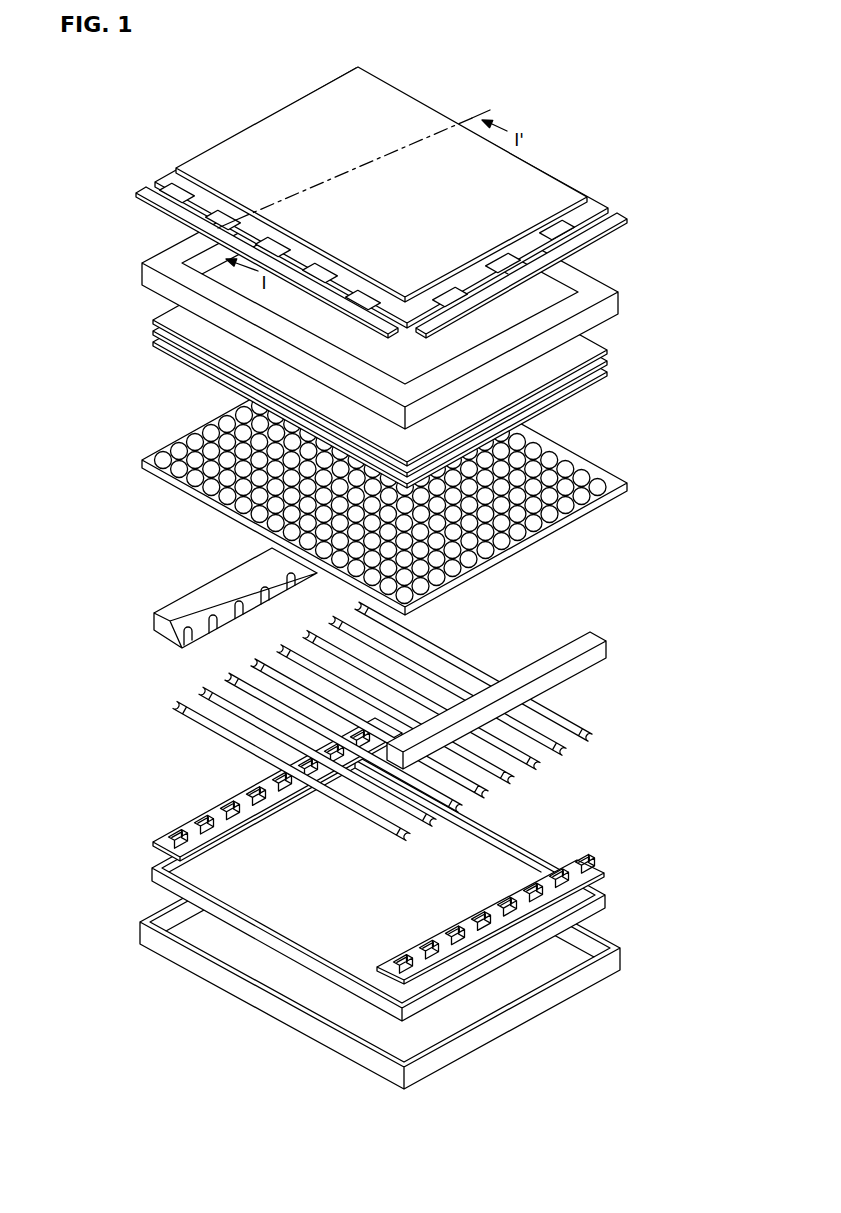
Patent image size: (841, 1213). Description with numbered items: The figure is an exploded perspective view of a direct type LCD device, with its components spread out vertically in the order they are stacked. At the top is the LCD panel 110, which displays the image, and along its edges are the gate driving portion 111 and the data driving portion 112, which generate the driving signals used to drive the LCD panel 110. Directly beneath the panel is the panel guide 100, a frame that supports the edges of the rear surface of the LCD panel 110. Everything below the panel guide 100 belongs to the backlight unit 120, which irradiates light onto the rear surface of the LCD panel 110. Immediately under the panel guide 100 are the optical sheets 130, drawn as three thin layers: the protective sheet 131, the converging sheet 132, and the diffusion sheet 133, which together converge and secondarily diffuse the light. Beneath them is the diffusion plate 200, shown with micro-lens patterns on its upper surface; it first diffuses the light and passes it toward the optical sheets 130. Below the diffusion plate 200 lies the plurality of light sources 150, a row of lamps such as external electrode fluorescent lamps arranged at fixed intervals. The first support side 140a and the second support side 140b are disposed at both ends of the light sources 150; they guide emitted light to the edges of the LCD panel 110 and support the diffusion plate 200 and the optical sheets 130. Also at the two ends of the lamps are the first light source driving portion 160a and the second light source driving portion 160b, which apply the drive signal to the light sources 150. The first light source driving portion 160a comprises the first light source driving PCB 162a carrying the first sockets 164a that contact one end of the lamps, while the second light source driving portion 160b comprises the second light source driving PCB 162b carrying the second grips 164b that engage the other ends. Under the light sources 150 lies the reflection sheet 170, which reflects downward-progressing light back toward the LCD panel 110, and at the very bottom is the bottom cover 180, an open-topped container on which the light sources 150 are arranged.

The panel guide 100 is at (600, 283).
The LCD panel 110 is at (377, 202).
The gate driving portion 111 is at (613, 216).
The data driving portion 112 is at (150, 188).
The backlight unit 120 is at (708, 347).
The optical sheets 130 is at (429, 348).
The protective sheet 131 is at (592, 342).
The converging sheet 132 is at (605, 361).
The diffusion sheet 133 is at (605, 374).
The first support side 140a is at (180, 608).
The second support side 140b is at (604, 650).
The light sources 150 is at (592, 711).
The first light source driving portion 160a is at (231, 789).
The second light source driving portion 160b is at (528, 890).
The first light source driving PCB 162a is at (178, 831).
The second light source driving PCB 162b is at (553, 858).
The first sockets 164a is at (162, 839).
The second grips 164b is at (589, 853).
The reflection sheet 170 is at (484, 836).
The bottom cover 180 is at (619, 923).
The diffusion plate 200 is at (634, 469).